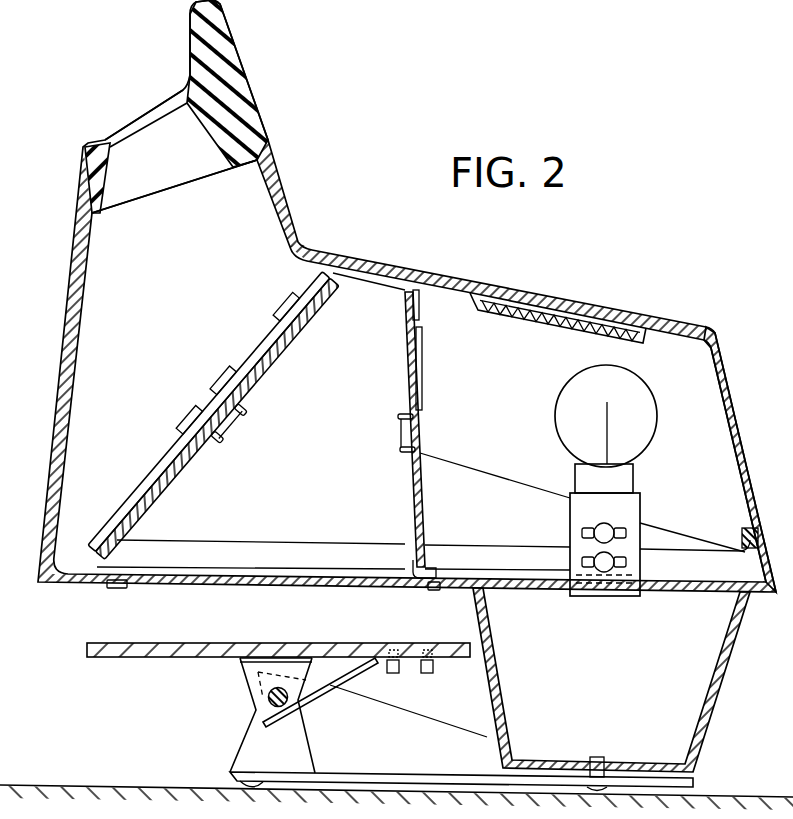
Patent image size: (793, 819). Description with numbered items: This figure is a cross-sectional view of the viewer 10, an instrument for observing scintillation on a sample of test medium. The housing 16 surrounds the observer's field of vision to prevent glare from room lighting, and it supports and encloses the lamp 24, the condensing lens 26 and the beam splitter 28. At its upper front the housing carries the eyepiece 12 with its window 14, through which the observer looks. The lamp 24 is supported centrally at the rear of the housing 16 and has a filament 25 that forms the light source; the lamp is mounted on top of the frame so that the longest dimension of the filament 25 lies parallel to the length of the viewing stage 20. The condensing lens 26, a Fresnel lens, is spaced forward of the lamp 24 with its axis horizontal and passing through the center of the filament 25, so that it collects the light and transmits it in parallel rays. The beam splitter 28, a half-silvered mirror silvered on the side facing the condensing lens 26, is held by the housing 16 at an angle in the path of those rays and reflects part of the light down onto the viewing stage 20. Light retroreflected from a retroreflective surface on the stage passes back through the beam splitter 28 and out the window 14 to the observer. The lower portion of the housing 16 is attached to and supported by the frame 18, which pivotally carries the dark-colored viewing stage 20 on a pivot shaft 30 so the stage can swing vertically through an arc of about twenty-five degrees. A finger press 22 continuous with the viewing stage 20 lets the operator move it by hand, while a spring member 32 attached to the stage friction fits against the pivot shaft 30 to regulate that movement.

The viewer 10 is at (413, 266).
The eyepiece 12 is at (195, 42).
The window 14 is at (143, 122).
The housing 16 is at (719, 343).
The frame 18 is at (705, 722).
The viewing stage 20 is at (90, 658).
The finger press 22 is at (520, 171).
The lamp 24 is at (574, 384).
The filament 25 is at (607, 433).
The condensing lens 26 is at (406, 366).
The beam splitter 28 is at (256, 372).
The pivot shaft 30 is at (268, 697).
The spring member 32 is at (334, 685).